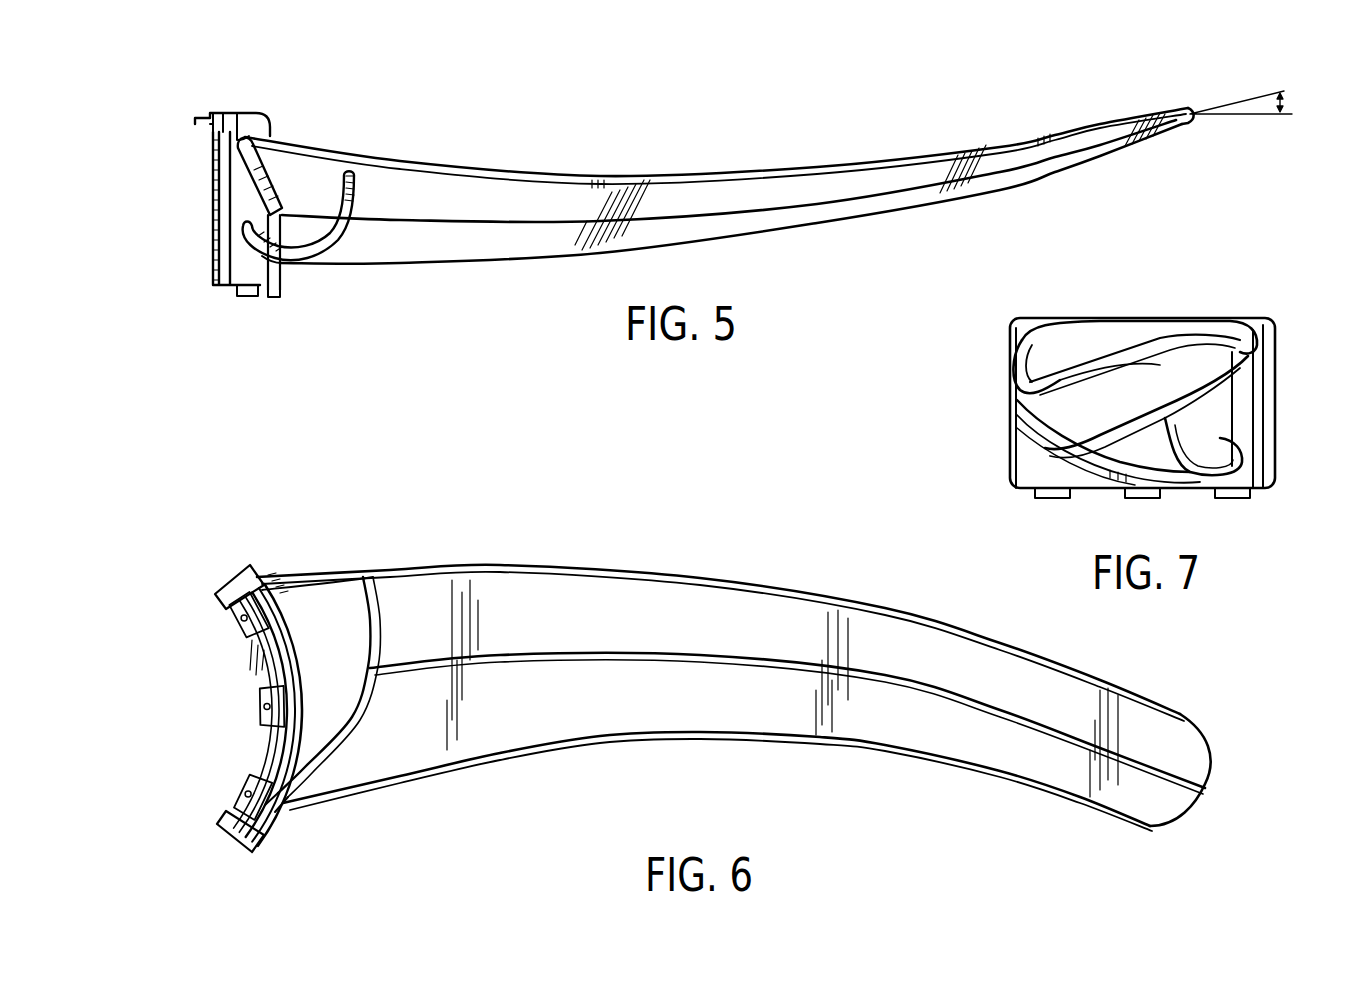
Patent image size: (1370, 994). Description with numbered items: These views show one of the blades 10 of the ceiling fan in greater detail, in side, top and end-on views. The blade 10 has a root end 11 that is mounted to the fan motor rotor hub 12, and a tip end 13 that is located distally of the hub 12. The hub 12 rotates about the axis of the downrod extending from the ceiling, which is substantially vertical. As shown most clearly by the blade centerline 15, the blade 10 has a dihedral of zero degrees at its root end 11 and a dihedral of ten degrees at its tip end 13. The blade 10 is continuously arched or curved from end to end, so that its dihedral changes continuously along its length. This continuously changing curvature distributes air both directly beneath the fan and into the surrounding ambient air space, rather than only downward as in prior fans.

In FIG. 5, the blade 10 is at (523, 108).
In FIG. 6, the blade 10 is at (708, 543).
In FIG. 5, the root end 11 is at (283, 130).
In FIG. 7, the root end 11 is at (1240, 438).
In FIG. 6, the root end 11 is at (265, 560).
In FIG. 5, the fan motor rotor hub 12 is at (238, 205).
In FIG. 7, the fan motor rotor hub 12 is at (1260, 378).
In FIG. 6, the fan motor rotor hub 12 is at (245, 640).
In FIG. 5, the tip end 13 is at (1130, 88).
In FIG. 7, the tip end 13 is at (1188, 320).
In FIG. 6, the tip end 13 is at (1135, 830).
In FIG. 5, the blade centerline 15 is at (752, 212).
In FIG. 7, the blade centerline 15 is at (1160, 365).
In FIG. 6, the blade centerline 15 is at (925, 688).